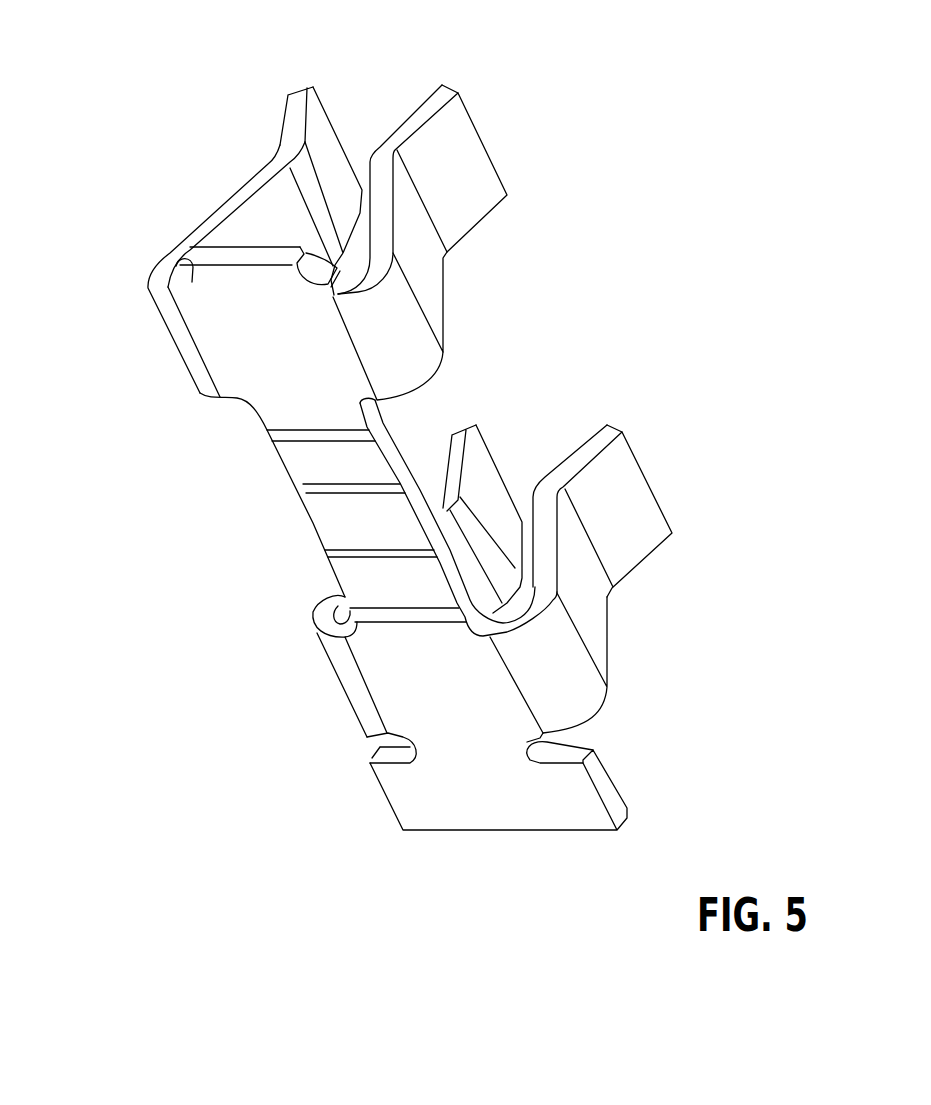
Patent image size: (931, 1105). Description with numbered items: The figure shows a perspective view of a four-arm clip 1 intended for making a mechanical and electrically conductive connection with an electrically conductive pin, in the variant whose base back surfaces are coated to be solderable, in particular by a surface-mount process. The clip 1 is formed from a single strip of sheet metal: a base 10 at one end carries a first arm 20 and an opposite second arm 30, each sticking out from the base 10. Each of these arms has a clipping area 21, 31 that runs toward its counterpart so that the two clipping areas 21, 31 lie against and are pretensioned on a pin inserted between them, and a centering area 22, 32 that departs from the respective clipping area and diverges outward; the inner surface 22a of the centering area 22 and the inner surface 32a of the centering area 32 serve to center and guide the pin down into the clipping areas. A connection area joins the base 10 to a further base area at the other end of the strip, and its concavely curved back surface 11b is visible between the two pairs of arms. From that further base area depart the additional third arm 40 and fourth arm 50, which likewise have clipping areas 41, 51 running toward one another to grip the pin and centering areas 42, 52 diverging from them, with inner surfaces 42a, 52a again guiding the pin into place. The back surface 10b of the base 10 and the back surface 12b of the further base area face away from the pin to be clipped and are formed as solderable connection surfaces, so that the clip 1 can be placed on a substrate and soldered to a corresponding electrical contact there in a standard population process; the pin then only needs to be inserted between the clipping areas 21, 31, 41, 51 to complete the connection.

The clip 1 is at (134, 512).
The base 10 is at (225, 318).
The back surface 10b is at (245, 343).
The back surface 11b is at (385, 513).
The back surface 12b is at (415, 690).
The first arm 20 is at (294, 80).
The clipping area 21 is at (230, 208).
The centering area 22 is at (291, 119).
The inner surface 22a is at (322, 129).
The second arm 30 is at (481, 144).
The clipping area 31 is at (428, 282).
The centering area 32 is at (468, 169).
The inner surface 32a is at (420, 103).
The third arm 40 is at (476, 416).
The clipping area 41 is at (341, 590).
The centering area 42 is at (458, 455).
The inner surface 42a is at (493, 469).
The fourth arm 50 is at (646, 482).
The clipping area 51 is at (596, 618).
The centering area 52 is at (637, 509).
The inner surface 52a is at (588, 443).